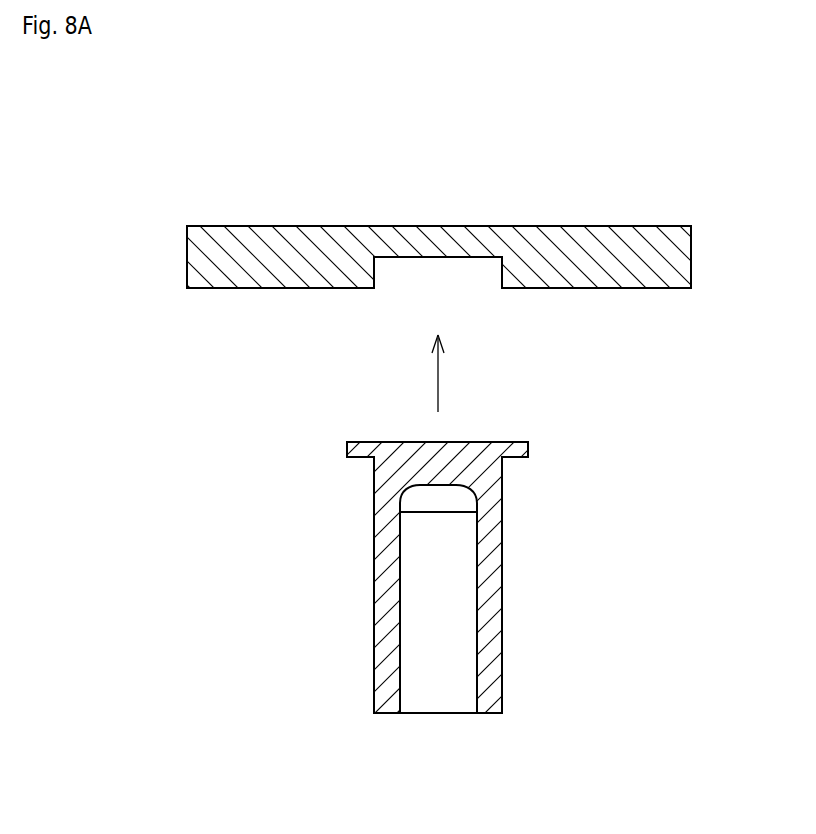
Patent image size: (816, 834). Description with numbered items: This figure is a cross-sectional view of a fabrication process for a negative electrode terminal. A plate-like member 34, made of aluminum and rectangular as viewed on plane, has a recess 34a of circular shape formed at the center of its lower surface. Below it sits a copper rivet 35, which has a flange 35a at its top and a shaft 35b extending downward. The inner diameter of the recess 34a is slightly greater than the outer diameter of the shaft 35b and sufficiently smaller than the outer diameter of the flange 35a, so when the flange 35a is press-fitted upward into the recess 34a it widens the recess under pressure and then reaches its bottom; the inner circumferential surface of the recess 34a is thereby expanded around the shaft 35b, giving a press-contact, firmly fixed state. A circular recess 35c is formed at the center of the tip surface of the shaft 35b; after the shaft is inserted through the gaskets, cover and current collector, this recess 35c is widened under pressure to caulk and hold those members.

The plate-like member 34 is at (670, 226).
The recess 34a is at (502, 270).
The copper rivet 35 is at (502, 503).
The flange 35a is at (528, 444).
The shaft 35b is at (502, 593).
The circular recess 35c is at (400, 690).